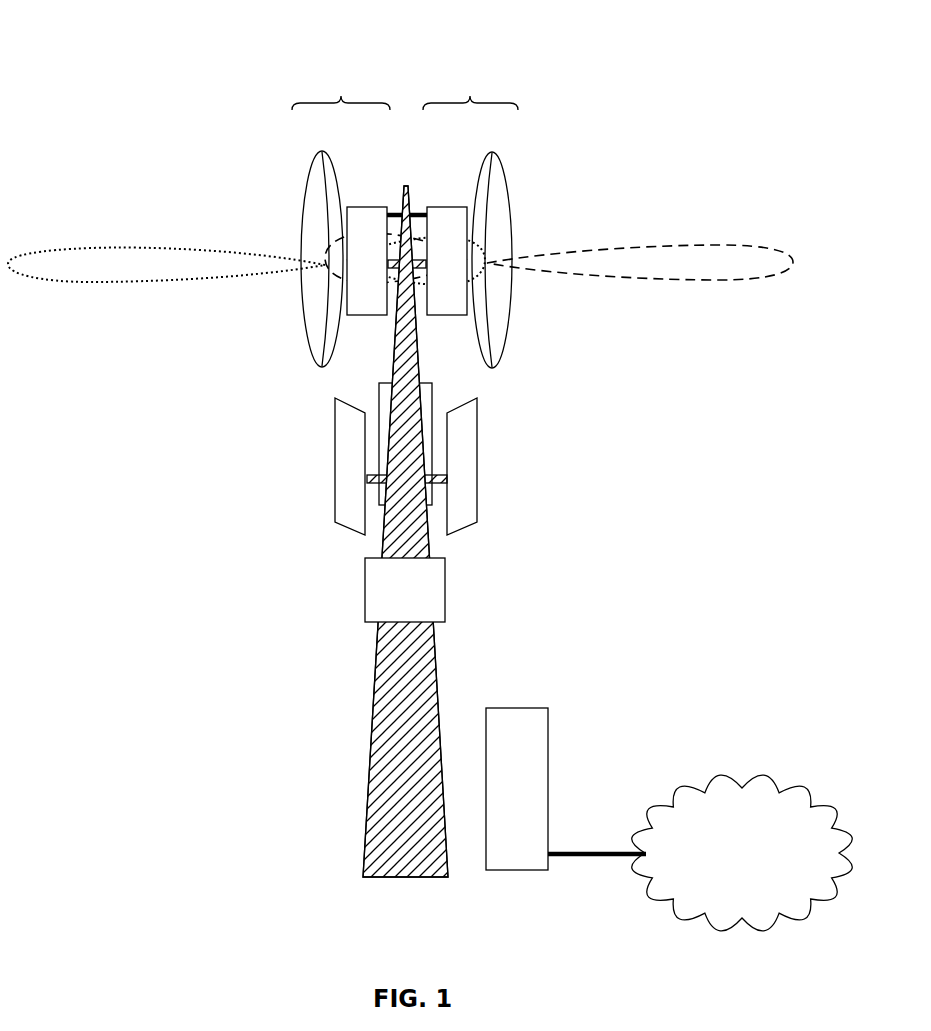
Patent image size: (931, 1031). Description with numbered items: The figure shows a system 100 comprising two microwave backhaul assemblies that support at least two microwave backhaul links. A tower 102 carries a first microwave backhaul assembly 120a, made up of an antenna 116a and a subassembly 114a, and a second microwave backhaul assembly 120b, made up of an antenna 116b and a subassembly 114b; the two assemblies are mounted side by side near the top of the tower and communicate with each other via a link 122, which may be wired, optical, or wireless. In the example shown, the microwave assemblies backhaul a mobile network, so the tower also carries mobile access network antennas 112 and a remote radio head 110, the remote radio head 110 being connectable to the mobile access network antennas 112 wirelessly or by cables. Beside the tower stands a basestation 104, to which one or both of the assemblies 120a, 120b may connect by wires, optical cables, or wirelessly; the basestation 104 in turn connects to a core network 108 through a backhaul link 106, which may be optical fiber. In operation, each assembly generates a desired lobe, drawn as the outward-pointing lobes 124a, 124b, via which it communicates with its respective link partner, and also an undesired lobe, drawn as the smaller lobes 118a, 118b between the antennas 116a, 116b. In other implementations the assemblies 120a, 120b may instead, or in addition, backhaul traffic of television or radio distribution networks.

The wireless communication system 100 is at (130, 66).
The tower 102 is at (370, 788).
The basestation 104 is at (512, 707).
The backhaul link 106 is at (599, 845).
The core network 108 is at (742, 853).
The remote radio head 110 is at (366, 596).
The mobile access network antennas 112 is at (340, 391).
The subassembly 114a is at (374, 207).
The subassembly 114b is at (446, 207).
The antenna 116a is at (320, 151).
The antenna 116b is at (505, 143).
The undesired lobe 118a is at (487, 252).
The undesired lobe 118b is at (330, 250).
The microwave backhaul assembly 120a is at (343, 96).
The microwave backhaul assembly 120b is at (476, 88).
The link 122 is at (392, 212).
The desired lobe 124a is at (122, 250).
The desired lobe 124b is at (668, 247).